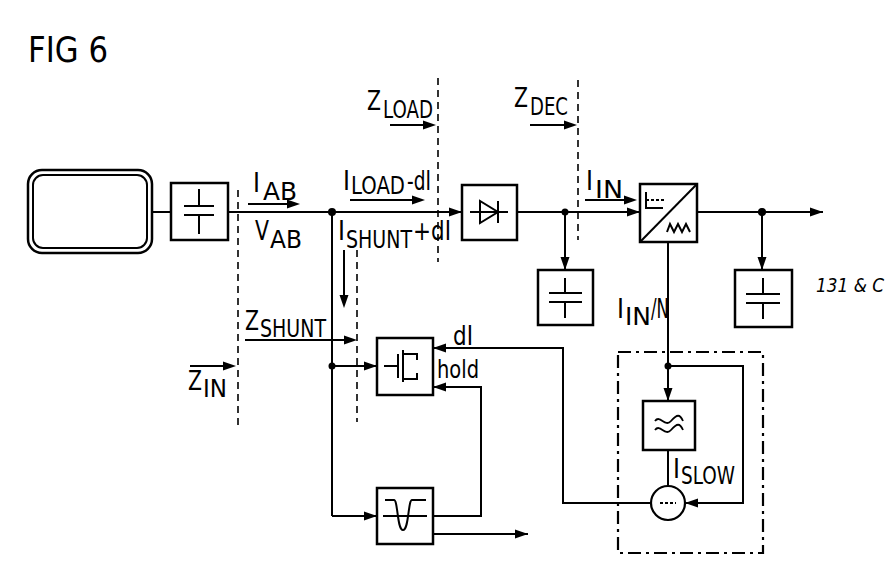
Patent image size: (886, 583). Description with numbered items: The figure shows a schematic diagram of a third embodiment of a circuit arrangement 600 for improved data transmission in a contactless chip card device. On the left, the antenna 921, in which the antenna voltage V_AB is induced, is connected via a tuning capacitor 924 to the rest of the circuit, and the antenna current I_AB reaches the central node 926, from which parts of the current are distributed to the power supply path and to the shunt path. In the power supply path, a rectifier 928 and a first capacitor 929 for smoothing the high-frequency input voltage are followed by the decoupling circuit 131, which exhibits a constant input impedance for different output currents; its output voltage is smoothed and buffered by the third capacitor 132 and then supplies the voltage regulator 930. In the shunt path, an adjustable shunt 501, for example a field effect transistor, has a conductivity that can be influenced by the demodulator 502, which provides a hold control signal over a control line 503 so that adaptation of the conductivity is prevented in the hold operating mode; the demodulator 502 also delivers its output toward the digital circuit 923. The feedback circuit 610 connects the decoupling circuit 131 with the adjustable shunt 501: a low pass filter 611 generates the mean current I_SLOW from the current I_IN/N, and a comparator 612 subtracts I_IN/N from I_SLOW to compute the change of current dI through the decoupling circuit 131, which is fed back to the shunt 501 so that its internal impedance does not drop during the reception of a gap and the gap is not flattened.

The circuit arrangement 600 is at (730, 96).
The antenna 921 is at (90, 170).
The tuning capacitor 924 is at (200, 183).
The central node 926 is at (331, 210).
The rectifier 928 is at (490, 185).
The first capacitor 929 is at (538, 298).
The decoupling circuit 131 is at (668, 184).
The voltage regulator 930 is at (782, 212).
The third capacitor 132 is at (735, 300).
The feedback circuit 610 is at (764, 437).
The low pass filter 611 is at (695, 425).
The comparator 612 is at (684, 510).
The adjustable shunt 501 is at (400, 338).
The demodulator 502 is at (407, 488).
The control line 503 is at (482, 434).
The digital circuit 923 is at (500, 534).